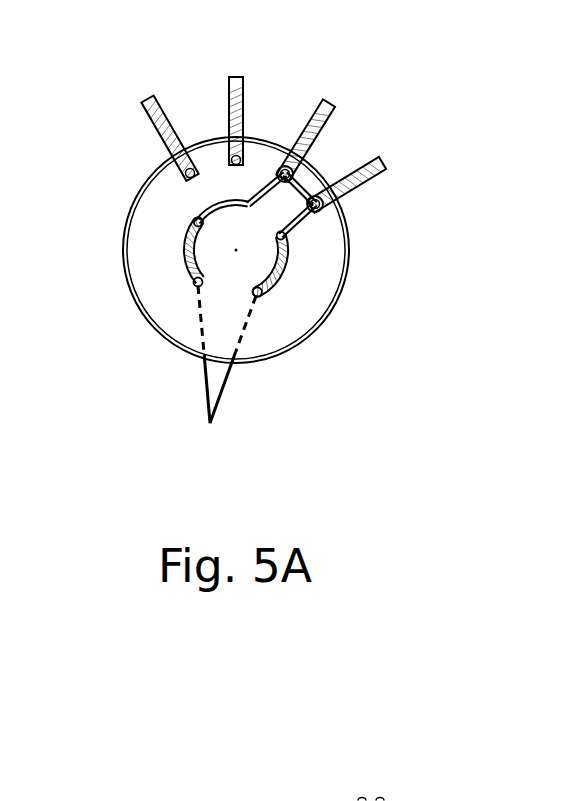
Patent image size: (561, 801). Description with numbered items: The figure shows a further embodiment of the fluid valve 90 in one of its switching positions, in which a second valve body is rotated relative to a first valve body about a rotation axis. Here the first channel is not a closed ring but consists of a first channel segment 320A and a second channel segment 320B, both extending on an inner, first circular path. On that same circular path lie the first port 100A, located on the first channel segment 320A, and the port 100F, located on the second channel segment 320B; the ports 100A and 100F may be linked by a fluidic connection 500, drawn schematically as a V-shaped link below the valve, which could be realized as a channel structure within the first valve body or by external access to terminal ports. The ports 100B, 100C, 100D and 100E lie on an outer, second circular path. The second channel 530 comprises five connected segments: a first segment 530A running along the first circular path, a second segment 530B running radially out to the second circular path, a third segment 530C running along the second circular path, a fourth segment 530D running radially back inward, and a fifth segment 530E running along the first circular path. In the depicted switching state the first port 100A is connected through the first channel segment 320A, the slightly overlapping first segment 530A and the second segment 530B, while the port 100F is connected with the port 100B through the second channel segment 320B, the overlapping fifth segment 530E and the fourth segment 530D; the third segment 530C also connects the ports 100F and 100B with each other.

The fluid valve 90 is at (420, 82).
The first port 100A is at (196, 287).
The port 100B is at (321, 207).
The port 100C is at (286, 168).
The port 100D is at (228, 160).
The port 100E is at (185, 175).
The port 100F is at (262, 295).
The first channel segment 320A is at (186, 250).
The second channel segment 320B is at (287, 256).
The fluidic connection 500 is at (227, 395).
The second channel 530 is at (301, 180).
The first segment 530A is at (196, 218).
The second segment 530B is at (250, 185).
The third segment 530C is at (293, 172).
The fourth segment 530D is at (290, 227).
The fifth segment 530E is at (266, 294).